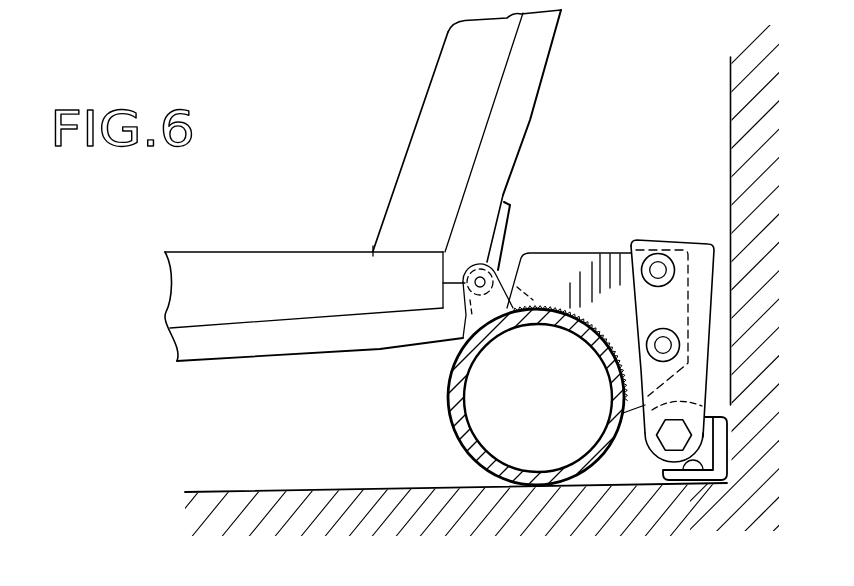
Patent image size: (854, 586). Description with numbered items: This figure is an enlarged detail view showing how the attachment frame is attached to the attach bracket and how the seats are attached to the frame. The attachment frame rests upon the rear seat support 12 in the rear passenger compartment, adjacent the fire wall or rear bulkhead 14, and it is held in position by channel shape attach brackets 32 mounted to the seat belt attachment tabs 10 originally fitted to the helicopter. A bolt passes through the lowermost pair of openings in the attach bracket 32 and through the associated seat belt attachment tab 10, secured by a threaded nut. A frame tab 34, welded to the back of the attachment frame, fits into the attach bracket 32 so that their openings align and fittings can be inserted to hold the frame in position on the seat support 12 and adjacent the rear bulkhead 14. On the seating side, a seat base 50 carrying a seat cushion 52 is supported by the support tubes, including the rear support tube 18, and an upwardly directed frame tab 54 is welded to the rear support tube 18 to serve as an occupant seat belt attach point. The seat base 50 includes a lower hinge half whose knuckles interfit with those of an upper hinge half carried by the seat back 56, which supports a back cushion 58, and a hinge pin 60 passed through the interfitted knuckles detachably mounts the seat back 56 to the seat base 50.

The seat belt attachment tab 10 is at (715, 430).
The rear seat support 12 is at (239, 490).
The rear bulkhead 14 is at (731, 83).
The rear support tube 18 is at (466, 360).
The attach bracket 32 is at (698, 242).
The frame tab 34 is at (588, 243).
The seat base 50 is at (218, 352).
The seat cushion 52 is at (232, 253).
The frame tab 54 is at (503, 280).
The seat back 56 is at (531, 78).
The back cushion 58 is at (441, 93).
The hinge pin 60 is at (476, 286).